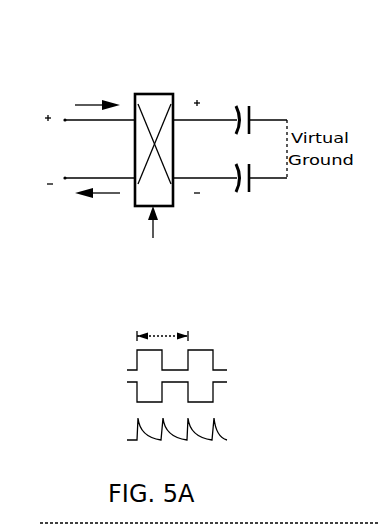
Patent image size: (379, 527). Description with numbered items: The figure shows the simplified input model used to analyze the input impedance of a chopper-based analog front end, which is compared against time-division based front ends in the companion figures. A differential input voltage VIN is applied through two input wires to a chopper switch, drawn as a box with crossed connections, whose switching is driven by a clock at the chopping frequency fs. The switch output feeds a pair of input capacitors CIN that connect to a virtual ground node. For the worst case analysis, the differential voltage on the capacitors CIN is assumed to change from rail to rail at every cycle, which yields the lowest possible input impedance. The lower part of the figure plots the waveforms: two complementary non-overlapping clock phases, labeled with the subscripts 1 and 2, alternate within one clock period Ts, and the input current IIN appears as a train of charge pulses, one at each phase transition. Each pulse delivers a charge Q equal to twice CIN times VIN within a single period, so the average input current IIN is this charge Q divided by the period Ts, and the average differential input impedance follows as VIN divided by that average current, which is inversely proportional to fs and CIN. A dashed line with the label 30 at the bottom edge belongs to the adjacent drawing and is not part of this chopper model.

The PHI1 switching clock phase waveform 1 is at (147, 356).
The PHI2 switching clock phase waveform 2 is at (147, 393).
The boundary line of adjacent figure (partially visible) 30 is at (196, 522).
The input voltage VIN is at (71, 149).
The input current IIN is at (97, 145).
The input capacitors CIN is at (230, 151).
The chopper clock frequency fs is at (150, 239).
The clock period Ts is at (162, 325).
The charge supplied per clock period Q is at (217, 433).